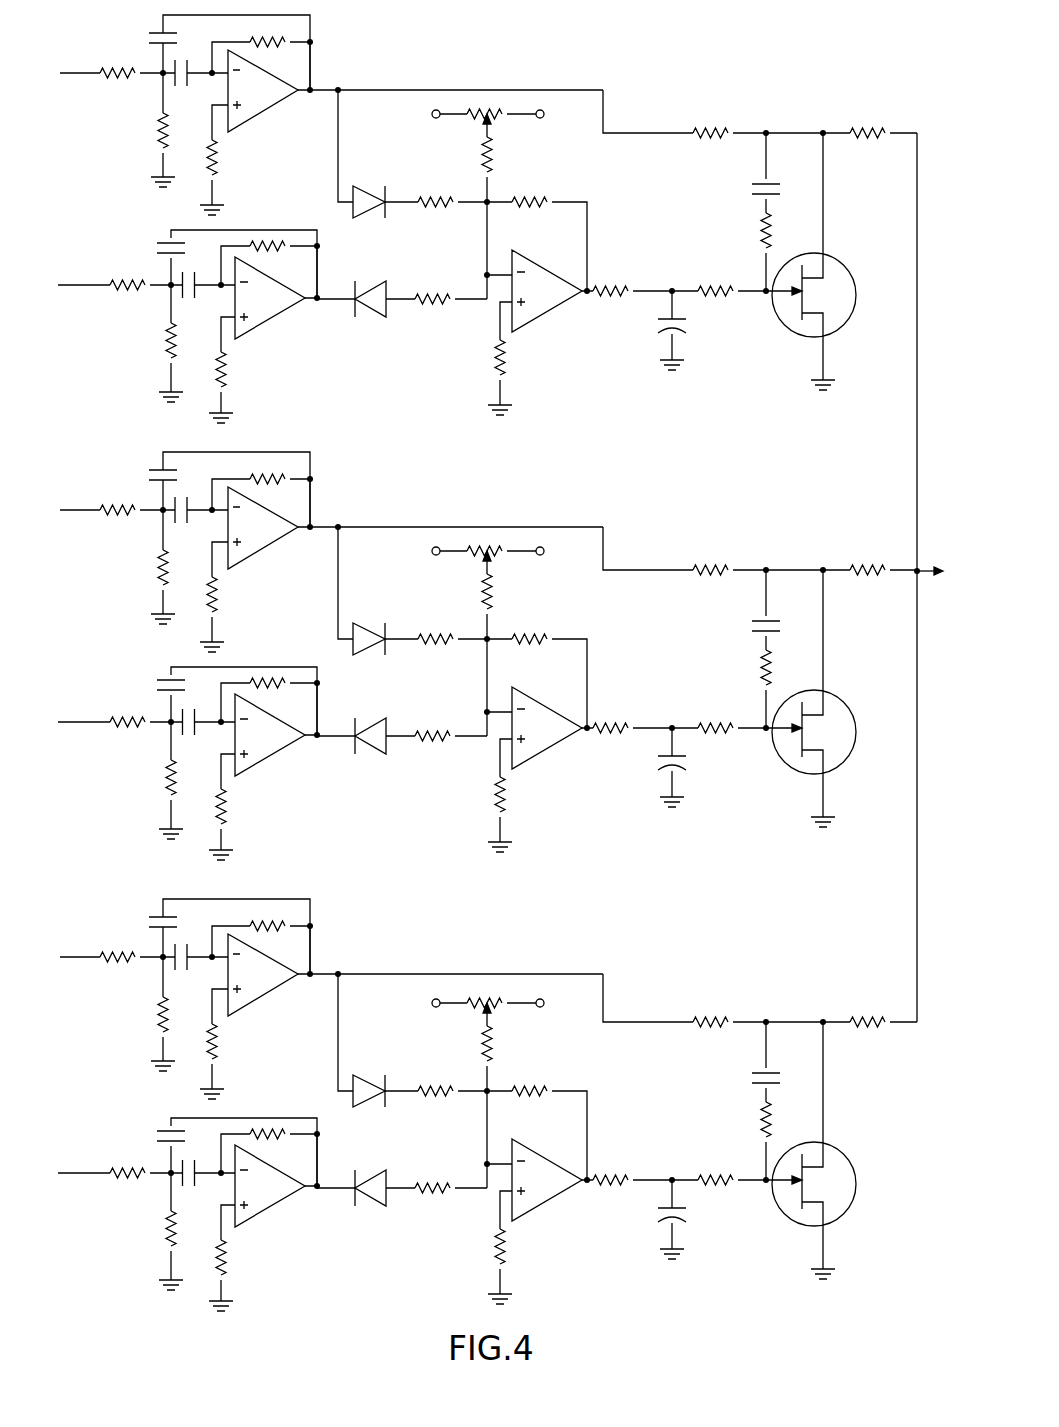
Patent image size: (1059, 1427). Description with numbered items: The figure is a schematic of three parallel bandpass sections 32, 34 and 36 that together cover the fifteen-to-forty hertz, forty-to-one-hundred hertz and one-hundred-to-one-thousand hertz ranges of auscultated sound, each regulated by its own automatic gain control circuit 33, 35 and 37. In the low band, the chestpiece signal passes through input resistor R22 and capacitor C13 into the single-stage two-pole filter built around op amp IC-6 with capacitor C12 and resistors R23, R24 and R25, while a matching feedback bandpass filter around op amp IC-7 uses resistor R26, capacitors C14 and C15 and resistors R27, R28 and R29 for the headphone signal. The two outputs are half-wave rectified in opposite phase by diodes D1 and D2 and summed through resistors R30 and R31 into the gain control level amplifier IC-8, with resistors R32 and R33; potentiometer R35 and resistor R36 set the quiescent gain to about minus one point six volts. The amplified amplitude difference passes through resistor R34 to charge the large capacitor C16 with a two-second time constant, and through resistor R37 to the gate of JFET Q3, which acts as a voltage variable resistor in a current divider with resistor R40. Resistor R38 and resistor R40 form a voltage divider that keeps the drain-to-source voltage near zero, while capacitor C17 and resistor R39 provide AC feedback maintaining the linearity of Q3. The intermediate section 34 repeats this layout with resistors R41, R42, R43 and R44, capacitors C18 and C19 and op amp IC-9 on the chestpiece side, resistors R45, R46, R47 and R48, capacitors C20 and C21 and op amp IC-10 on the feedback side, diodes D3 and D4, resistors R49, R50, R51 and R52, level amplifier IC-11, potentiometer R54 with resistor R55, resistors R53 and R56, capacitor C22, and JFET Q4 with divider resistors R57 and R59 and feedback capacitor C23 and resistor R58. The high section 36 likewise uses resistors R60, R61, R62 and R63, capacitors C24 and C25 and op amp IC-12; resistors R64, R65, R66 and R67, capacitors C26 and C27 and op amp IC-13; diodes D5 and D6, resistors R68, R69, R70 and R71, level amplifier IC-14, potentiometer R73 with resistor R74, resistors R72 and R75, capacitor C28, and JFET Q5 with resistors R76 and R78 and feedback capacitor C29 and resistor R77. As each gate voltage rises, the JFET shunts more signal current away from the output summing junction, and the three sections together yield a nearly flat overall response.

The bandpass section 32 is at (645, 80).
The automatic gain control circuit 33 is at (610, 262).
The bandpass section 34 is at (507, 465).
The automatic gain control circuit 35 is at (618, 670).
The bandpass section 36 is at (605, 920).
The automatic gain control circuit 37 is at (625, 1137).
The resistor R22 is at (117, 85).
The resistor R23 is at (146, 130).
The resistor R24 is at (262, 63).
The resistor R25 is at (227, 160).
The capacitor C12 is at (213, 52).
The capacitor C13 is at (187, 84).
The operational amplifier IC-6 is at (263, 91).
The resistor R26 is at (126, 296).
The resistor R27 is at (155, 343).
The resistor R28 is at (270, 269).
The resistor R29 is at (235, 370).
The capacitor C14 is at (219, 264).
The capacitor C15 is at (194, 296).
The operational amplifier IC-7 is at (270, 298).
The diode D1 is at (369, 189).
The diode D2 is at (370, 287).
The resistor R30 is at (435, 188).
The resistor R31 is at (432, 288).
The resistor R32 is at (529, 214).
The resistor R33 is at (515, 358).
The resistor R34 is at (611, 301).
The potentiometer R35 is at (488, 125).
The resistor R36 is at (505, 143).
The resistor R37 is at (715, 301).
The operational amplifier IC-8 is at (547, 291).
The capacitor C16 is at (691, 330).
The capacitor C17 is at (746, 173).
The resistor R38 is at (710, 122).
The resistor R39 is at (784, 252).
The resistor R40 is at (867, 122).
The JFET Q3 is at (816, 261).
The resistor R41 is at (117, 522).
The resistor R42 is at (145, 567).
The resistor R43 is at (262, 500).
The resistor R44 is at (227, 597).
The capacitor C18 is at (211, 489).
The capacitor C19 is at (189, 521).
The operational amplifier IC-9 is at (263, 528).
The resistor R45 is at (126, 733).
The resistor R46 is at (152, 780).
The resistor R47 is at (270, 706).
The resistor R48 is at (235, 807).
The capacitor C20 is at (216, 701).
The capacitor C21 is at (194, 733).
The operational amplifier IC-10 is at (270, 735).
The diode D3 is at (368, 627).
The diode D4 is at (370, 726).
The resistor R49 is at (435, 625).
The resistor R50 is at (432, 725).
The resistor R51 is at (529, 651).
The resistor R52 is at (515, 795).
The resistor R53 is at (613, 718).
The potentiometer R54 is at (488, 562).
The resistor R55 is at (505, 580).
The resistor R56 is at (717, 718).
The operational amplifier IC-11 is at (547, 728).
The capacitor C22 is at (692, 767).
The capacitor C23 is at (780, 610).
The resistor R57 is at (710, 559).
The resistor R58 is at (784, 689).
The resistor R59 is at (866, 559).
The JFET Q4 is at (816, 698).
The resistor R60 is at (116, 969).
The resistor R61 is at (147, 1014).
The resistor R62 is at (262, 947).
The resistor R63 is at (227, 1044).
The capacitor C24 is at (209, 936).
The capacitor C25 is at (189, 968).
The operational amplifier IC-12 is at (263, 975).
The resistor R64 is at (126, 1184).
The resistor R65 is at (153, 1231).
The resistor R66 is at (270, 1157).
The resistor R67 is at (235, 1258).
The capacitor C26 is at (215, 1152).
The capacitor C27 is at (194, 1184).
The operational amplifier IC-13 is at (270, 1186).
The diode D5 is at (368, 1079).
The diode D6 is at (370, 1177).
The resistor R68 is at (435, 1077).
The resistor R69 is at (432, 1177).
The resistor R70 is at (529, 1103).
The resistor R71 is at (515, 1247).
The resistor R72 is at (616, 1170).
The potentiometer R73 is at (488, 1014).
The resistor R74 is at (505, 1032).
The resistor R75 is at (715, 1170).
The operational amplifier IC-14 is at (547, 1180).
The capacitor C28 is at (691, 1219).
The capacitor C29 is at (780, 1062).
The resistor R76 is at (710, 1011).
The resistor R77 is at (784, 1141).
The resistor R78 is at (866, 1011).
The JFET Q5 is at (816, 1150).